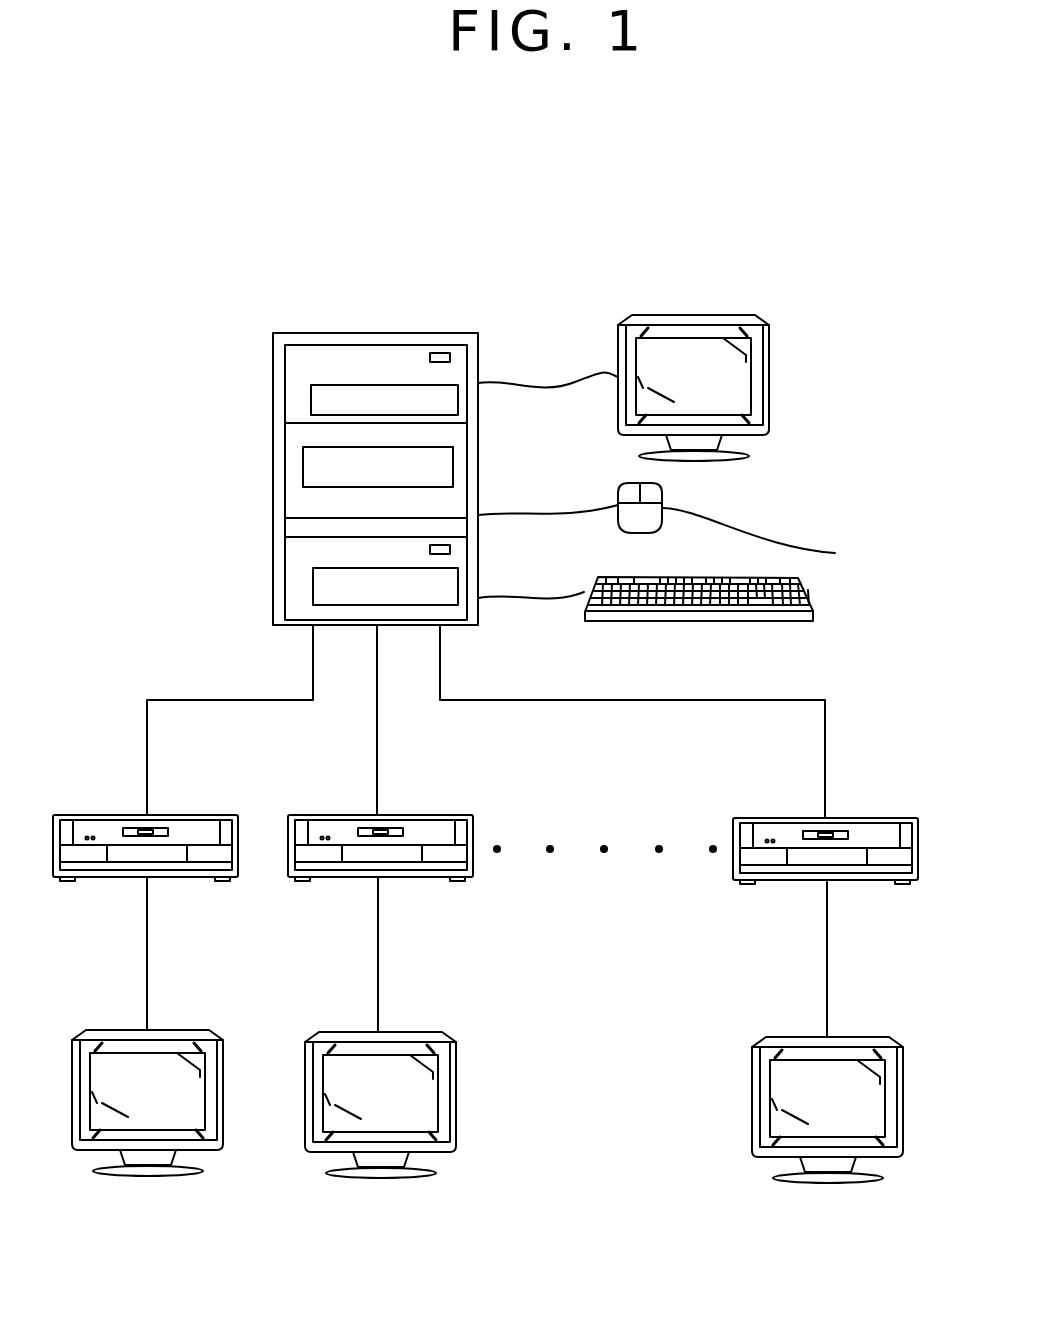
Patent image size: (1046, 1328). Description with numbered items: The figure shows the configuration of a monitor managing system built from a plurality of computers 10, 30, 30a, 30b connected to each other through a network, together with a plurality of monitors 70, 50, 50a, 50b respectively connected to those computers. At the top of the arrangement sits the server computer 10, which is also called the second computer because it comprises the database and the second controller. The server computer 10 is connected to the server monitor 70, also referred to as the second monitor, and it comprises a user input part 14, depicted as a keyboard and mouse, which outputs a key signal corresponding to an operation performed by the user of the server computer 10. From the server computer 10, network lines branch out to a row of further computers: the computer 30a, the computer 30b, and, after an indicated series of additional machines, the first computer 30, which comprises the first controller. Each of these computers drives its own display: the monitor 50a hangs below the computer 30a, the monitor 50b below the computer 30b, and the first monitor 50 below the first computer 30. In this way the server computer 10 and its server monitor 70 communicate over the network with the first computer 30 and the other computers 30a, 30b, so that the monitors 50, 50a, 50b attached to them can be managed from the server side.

The server computer 10 is at (375, 332).
The server monitor 70 is at (770, 400).
The user input part 14 is at (806, 584).
The computer 30a is at (200, 815).
The computer 30b is at (432, 815).
The first computer 30 is at (880, 818).
The monitor 50a is at (180, 1030).
The monitor 50b is at (410, 1032).
The first monitor 50 is at (858, 1037).